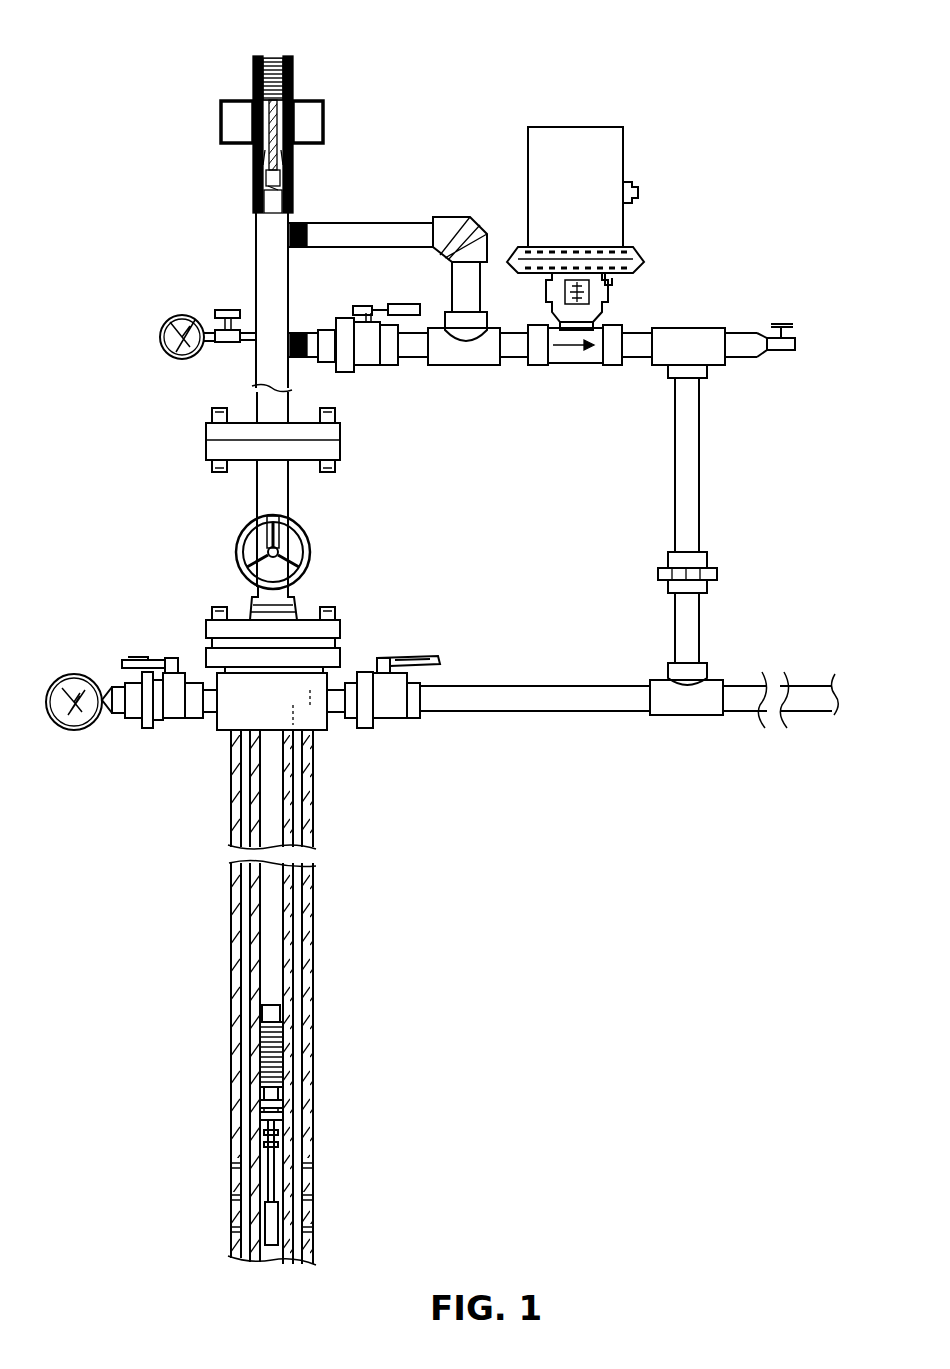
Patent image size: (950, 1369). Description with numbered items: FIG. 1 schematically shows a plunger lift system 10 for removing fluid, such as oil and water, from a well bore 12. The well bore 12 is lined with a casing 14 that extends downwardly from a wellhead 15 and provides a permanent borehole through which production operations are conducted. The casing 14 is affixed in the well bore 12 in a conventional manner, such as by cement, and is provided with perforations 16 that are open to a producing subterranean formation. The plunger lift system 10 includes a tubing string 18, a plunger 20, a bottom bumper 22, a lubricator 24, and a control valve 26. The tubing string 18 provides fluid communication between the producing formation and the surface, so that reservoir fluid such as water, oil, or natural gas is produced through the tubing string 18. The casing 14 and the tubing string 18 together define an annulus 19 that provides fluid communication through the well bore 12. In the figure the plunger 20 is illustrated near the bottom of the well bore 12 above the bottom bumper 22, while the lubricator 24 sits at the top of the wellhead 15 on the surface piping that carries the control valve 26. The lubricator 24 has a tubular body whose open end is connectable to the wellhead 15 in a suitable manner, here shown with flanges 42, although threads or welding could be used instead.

The plunger lift system 10 is at (160, 22).
The well bore 12 is at (231, 790).
The casing 14 is at (313, 883).
The wellhead 15 is at (340, 630).
The perforations 16 is at (231, 1170).
The tubing string 18 is at (252, 938).
The annulus 19 is at (293, 945).
The plunger 20 is at (283, 1050).
The bottom bumper 22 is at (276, 1163).
The lubricator 24 is at (298, 82).
The control valve 26 is at (644, 262).
The flanges 42 is at (340, 432).